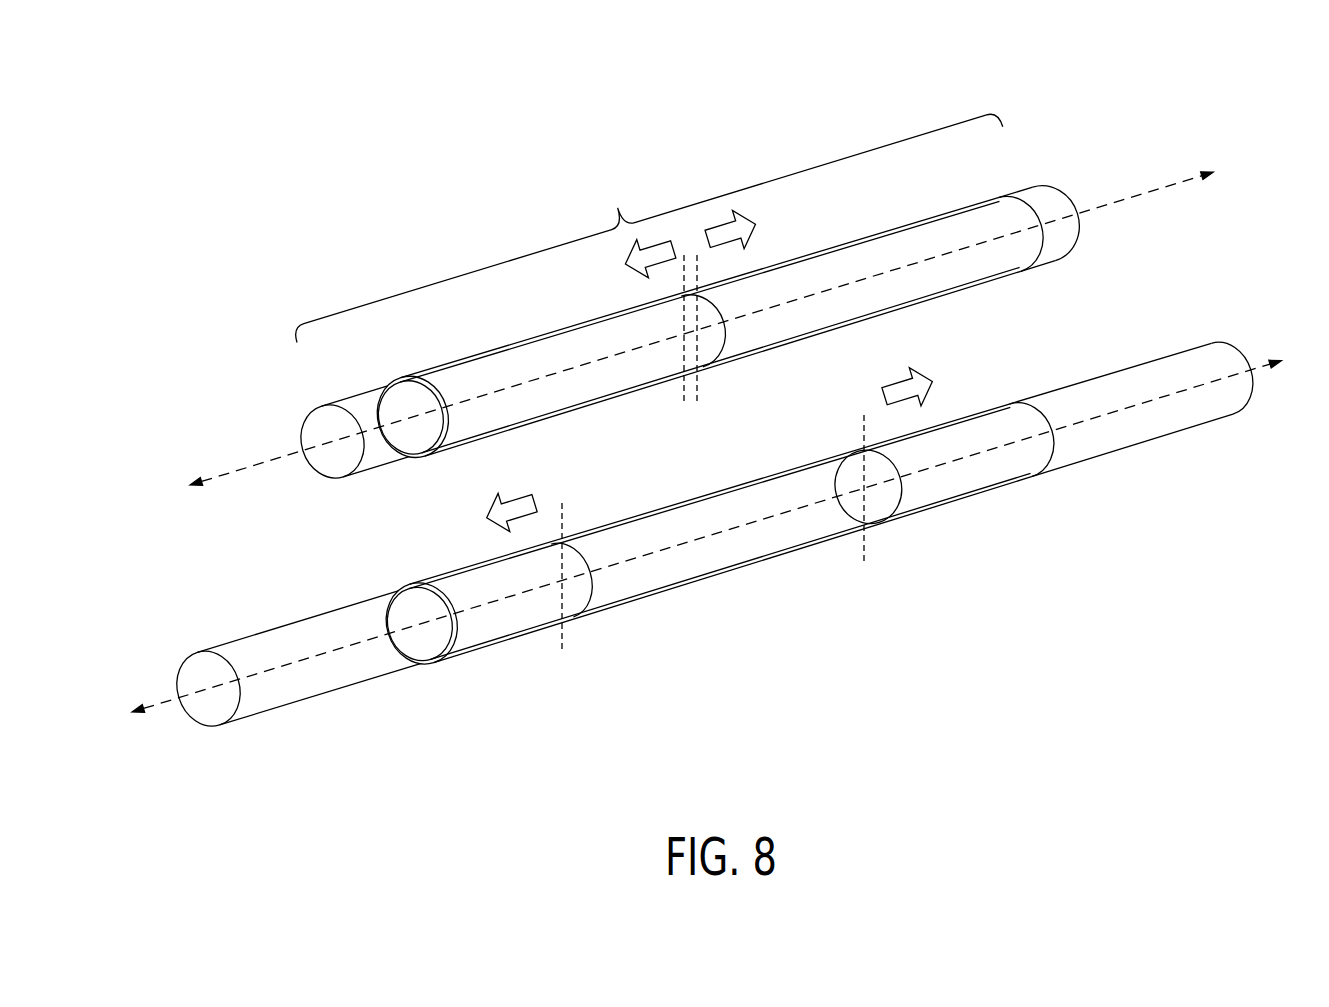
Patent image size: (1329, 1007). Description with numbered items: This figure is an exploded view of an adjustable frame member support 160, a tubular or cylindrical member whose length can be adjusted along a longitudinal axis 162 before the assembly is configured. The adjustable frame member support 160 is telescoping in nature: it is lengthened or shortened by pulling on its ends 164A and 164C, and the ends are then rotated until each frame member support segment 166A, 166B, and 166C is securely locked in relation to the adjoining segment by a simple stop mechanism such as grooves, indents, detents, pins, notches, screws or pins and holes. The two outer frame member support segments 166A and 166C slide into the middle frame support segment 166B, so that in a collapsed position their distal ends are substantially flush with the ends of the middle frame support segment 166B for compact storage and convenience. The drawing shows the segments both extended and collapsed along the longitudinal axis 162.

The adjustable frame member support 160 is at (668, 265).
The longitudinal axis 162 is at (725, 435).
The end 164A is at (322, 395).
The end 164C is at (1046, 176).
The frame member support segment 166A is at (400, 687).
The middle frame support segment 166B is at (734, 581).
The frame member support segment 166C is at (1059, 483).